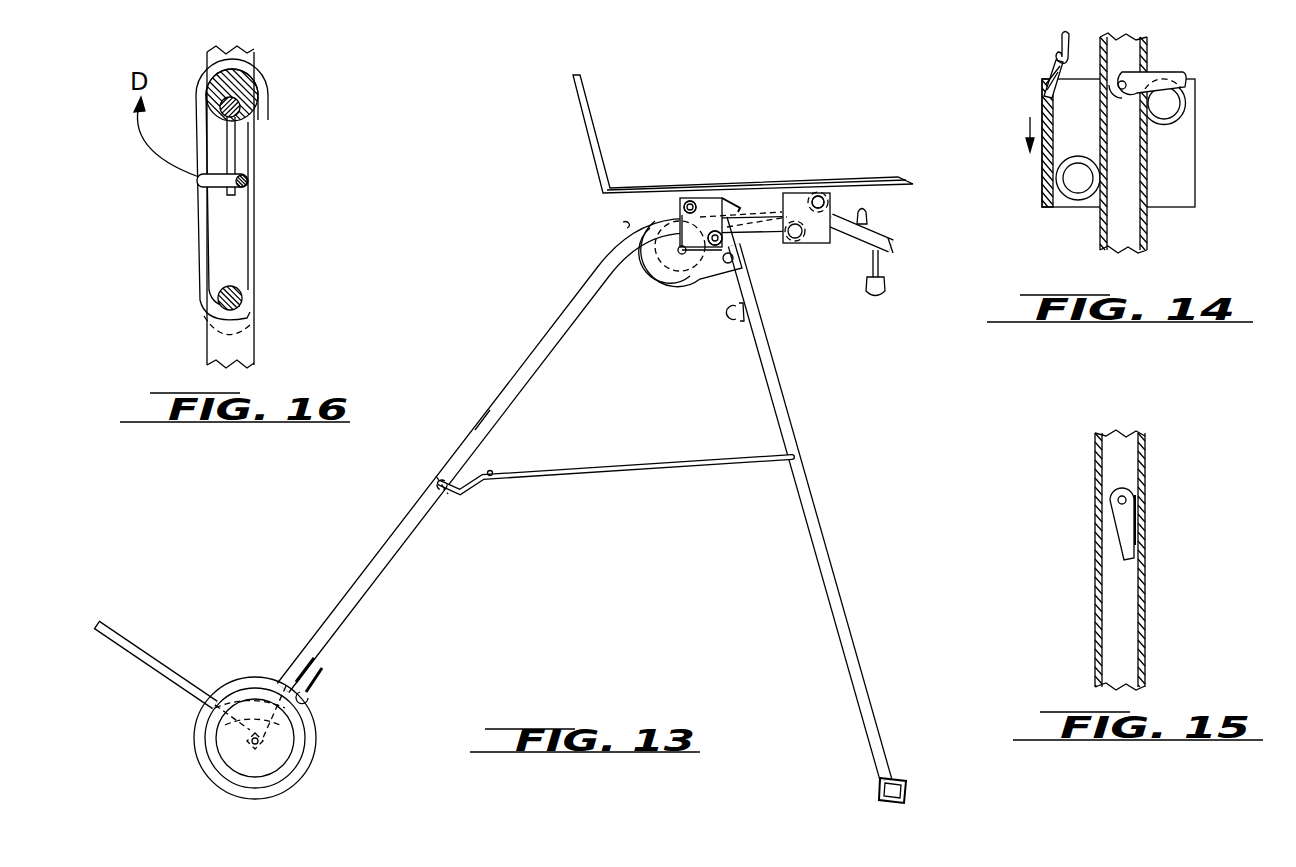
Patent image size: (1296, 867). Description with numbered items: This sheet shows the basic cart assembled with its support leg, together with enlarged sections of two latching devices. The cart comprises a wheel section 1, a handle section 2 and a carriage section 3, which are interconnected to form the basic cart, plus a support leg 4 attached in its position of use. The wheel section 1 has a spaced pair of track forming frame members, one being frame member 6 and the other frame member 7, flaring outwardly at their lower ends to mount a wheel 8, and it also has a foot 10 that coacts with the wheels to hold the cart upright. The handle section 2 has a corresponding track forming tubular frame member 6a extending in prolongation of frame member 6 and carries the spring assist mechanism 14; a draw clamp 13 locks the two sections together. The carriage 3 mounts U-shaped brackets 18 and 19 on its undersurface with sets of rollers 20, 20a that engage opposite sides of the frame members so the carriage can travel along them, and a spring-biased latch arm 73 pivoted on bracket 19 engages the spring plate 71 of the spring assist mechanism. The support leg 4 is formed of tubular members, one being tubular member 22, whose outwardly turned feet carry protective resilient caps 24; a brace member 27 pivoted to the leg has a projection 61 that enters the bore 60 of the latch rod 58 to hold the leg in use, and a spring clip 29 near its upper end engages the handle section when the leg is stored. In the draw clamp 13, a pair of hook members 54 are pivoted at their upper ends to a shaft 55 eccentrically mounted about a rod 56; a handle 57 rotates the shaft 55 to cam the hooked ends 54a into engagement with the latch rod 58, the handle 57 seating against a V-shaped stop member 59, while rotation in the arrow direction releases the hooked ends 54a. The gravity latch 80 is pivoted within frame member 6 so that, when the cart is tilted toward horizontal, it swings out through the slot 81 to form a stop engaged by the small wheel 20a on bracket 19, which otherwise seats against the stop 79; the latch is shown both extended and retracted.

In FIG. 13, the wheel section 1 is at (363, 664).
In FIG. 13, the handle section 2 is at (540, 375).
In FIG. 13, the carriage section 3 is at (813, 170).
In FIG. 13, the support leg 4 is at (803, 470).
In FIG. 13, the track forming frame member 6 is at (340, 618).
In FIG. 14, the track forming frame member 6 is at (1123, 143).
In FIG. 15, the track forming frame member 6 is at (1095, 620).
In FIG. 13, the track forming tubular frame member 6a is at (535, 355).
In FIG. 16, the track forming frame member 7 is at (254, 303).
In FIG. 13, the wheel 8 is at (297, 778).
In FIG. 13, the foot 10 is at (140, 658).
In FIG. 16, the draw clamp 13 is at (255, 230).
In FIG. 13, the spring assist mechanism 14 is at (652, 278).
In FIG. 13, the U-shaped bracket 18 is at (808, 242).
In FIG. 13, the U-shaped bracket 19 is at (707, 200).
In FIG. 14, the U-shaped bracket 19 is at (1190, 170).
In FIG. 13, the roller 20 is at (682, 208).
In FIG. 14, the roller 20 is at (1080, 200).
In FIG. 13, the roller 20a is at (723, 242).
In FIG. 14, the roller 20a is at (1123, 148).
In FIG. 13, the tubular member 22 is at (858, 700).
In FIG. 13, the protective resilient cap 24 is at (906, 783).
In FIG. 13, the brace member 27 is at (555, 475).
In FIG. 13, the spring clip 29 is at (733, 320).
In FIG. 16, the hook member 54 is at (199, 260).
In FIG. 16, the hooked end 54a is at (245, 318).
In FIG. 16, the shaft 55 is at (250, 85).
In FIG. 16, the rod 56 is at (240, 110).
In FIG. 16, the handle 57 is at (227, 135).
In FIG. 13, the latch rod 58 is at (446, 489).
In FIG. 16, the latch rod 58 is at (238, 292).
In FIG. 16, the V-shaped stop member 59 is at (248, 181).
In FIG. 16, the bore 60 is at (234, 292).
In FIG. 13, the projection 61 is at (438, 480).
In FIG. 14, the spring plate 71 is at (1062, 38).
In FIG. 14, the latch arm 73 is at (1056, 70).
In FIG. 16, the stop 79 is at (248, 142).
In FIG. 14, the gravity latch 80 is at (1157, 72).
In FIG. 15, the gravity latch 80 is at (1115, 520).
In FIG. 15, the slot 81 is at (1140, 545).